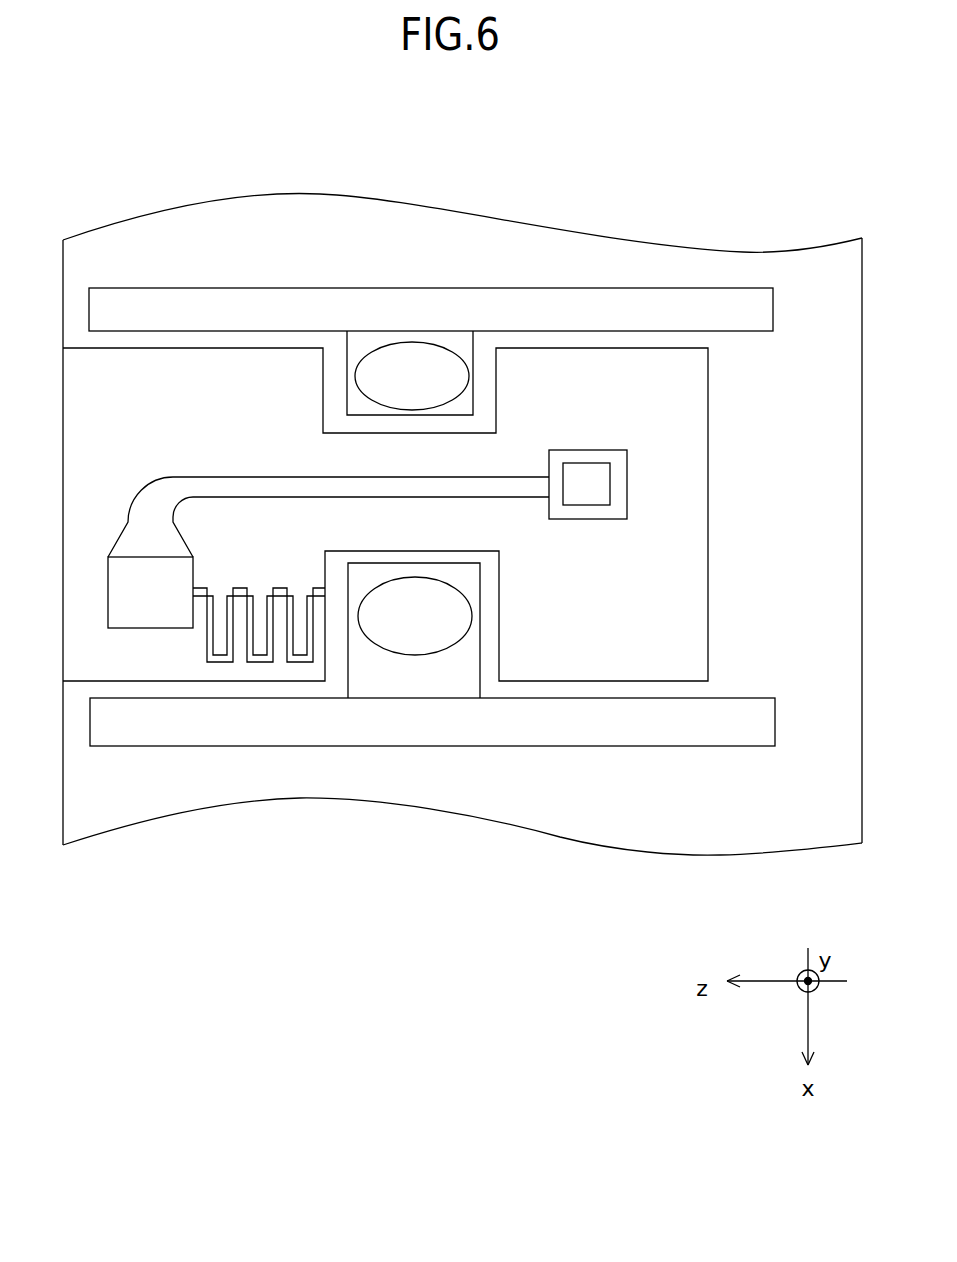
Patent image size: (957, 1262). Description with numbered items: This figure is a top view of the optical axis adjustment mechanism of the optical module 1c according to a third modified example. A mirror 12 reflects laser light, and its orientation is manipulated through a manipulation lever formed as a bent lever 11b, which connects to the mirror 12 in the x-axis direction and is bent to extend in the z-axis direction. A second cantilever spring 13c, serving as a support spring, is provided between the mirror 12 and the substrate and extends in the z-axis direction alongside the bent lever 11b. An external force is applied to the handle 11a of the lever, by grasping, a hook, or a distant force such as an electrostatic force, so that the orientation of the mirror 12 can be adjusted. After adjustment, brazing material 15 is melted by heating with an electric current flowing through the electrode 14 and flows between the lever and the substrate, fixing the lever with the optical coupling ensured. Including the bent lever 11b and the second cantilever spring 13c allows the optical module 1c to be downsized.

The optical module 1c is at (714, 166).
The electrode 14 is at (676, 295).
The brazing material 15 is at (407, 352).
The handle 11a is at (590, 477).
The bent lever 11b is at (511, 477).
The mirror 12 is at (118, 602).
The second cantilever spring 13c is at (243, 588).